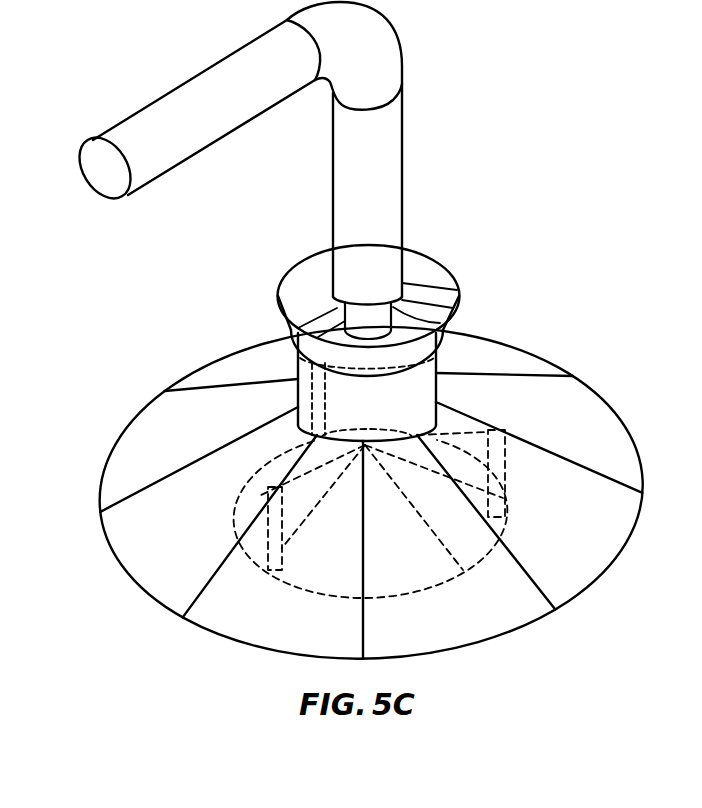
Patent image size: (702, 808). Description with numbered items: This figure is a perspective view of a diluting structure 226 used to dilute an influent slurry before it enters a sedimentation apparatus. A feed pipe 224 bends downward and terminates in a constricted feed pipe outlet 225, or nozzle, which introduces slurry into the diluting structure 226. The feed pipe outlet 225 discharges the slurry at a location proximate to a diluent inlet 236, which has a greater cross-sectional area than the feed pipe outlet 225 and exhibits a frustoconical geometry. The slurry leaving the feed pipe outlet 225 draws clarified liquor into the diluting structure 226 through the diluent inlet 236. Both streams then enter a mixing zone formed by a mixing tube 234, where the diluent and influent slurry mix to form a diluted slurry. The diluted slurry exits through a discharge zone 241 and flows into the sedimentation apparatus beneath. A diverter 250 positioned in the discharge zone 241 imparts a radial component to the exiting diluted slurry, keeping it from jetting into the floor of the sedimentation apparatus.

The feed pipe 224 is at (402, 50).
The diluting structure 226 is at (523, 194).
The diluent inlet 236 is at (307, 286).
The feed pipe outlet 225 is at (392, 328).
The mixing tube 234 is at (437, 358).
The discharge zone 241 is at (129, 611).
The diverter 250 is at (235, 497).